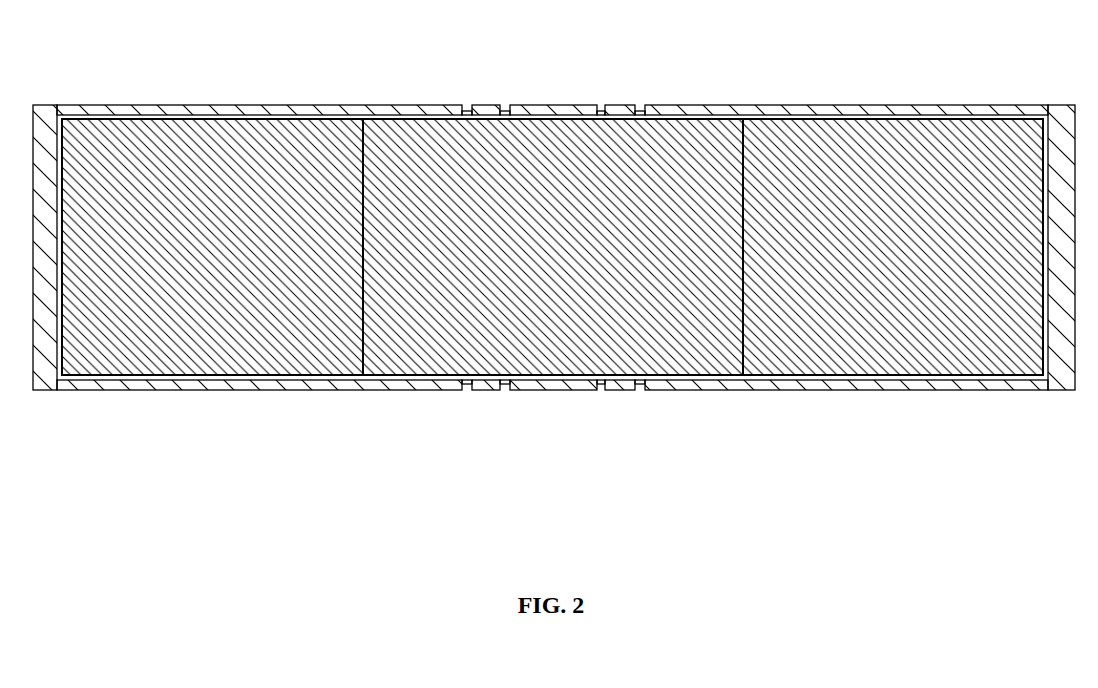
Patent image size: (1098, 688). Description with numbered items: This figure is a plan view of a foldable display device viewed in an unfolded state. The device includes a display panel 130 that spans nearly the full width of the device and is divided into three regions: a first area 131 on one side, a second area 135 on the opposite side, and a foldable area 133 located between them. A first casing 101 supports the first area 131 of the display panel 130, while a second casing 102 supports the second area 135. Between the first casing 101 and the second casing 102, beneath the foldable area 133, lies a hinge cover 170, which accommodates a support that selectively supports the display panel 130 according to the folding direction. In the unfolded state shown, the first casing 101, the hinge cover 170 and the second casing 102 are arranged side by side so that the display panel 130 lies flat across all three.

The first casing 101 is at (143, 390).
The second casing 102 is at (878, 390).
The display panel 130 is at (552, 255).
The first area 131 is at (268, 140).
The foldable area 133 is at (415, 140).
The second area 135 is at (800, 138).
The hinge cover 170 is at (553, 390).